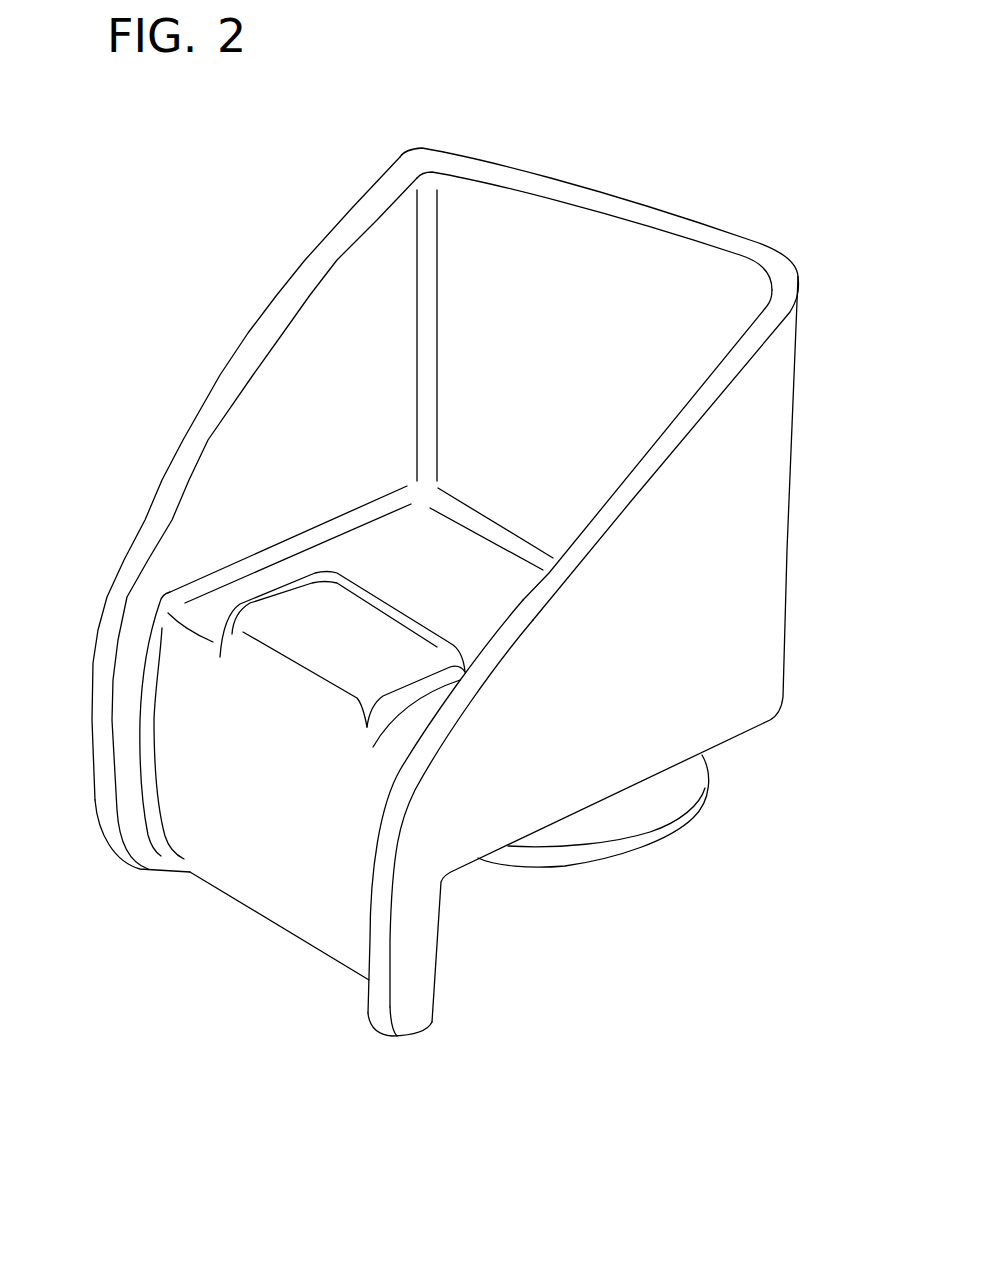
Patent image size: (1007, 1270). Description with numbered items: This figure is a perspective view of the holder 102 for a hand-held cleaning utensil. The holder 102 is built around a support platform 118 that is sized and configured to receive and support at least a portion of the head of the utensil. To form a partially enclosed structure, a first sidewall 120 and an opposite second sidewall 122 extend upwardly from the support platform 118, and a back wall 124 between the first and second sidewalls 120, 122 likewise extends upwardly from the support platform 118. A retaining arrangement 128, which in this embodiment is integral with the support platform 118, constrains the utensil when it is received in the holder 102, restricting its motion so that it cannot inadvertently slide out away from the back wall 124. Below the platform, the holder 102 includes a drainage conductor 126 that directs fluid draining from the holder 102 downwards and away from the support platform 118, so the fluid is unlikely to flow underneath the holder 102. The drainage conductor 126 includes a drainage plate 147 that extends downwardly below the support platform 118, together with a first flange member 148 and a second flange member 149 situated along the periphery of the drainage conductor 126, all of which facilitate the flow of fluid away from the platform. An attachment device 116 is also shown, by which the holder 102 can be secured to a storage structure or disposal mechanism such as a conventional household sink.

The holder 102 is at (236, 210).
The attachment device 116 is at (628, 823).
The support platform 118 is at (418, 557).
The first sidewall 120 is at (323, 382).
The second sidewall 122 is at (743, 528).
The back wall 124 is at (632, 195).
The drainage conductor 126 is at (268, 855).
The retaining arrangement 128 is at (292, 675).
The drainage plate 147 is at (290, 913).
The first flange member 148 is at (132, 808).
The second flange member 149 is at (408, 995).